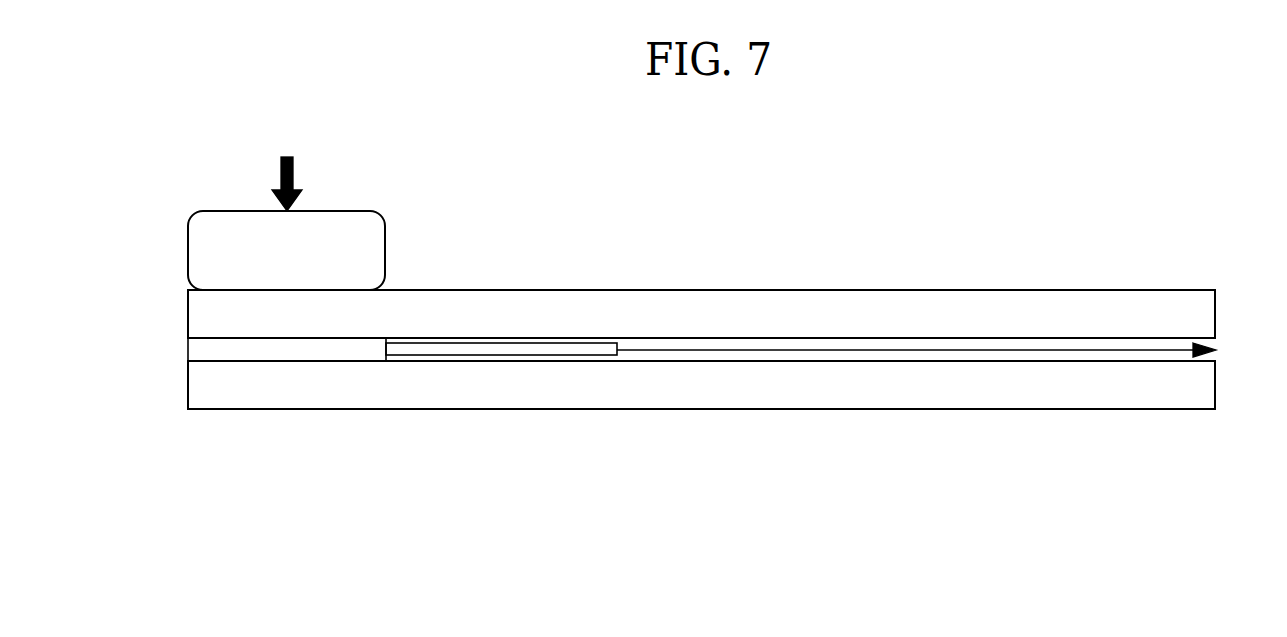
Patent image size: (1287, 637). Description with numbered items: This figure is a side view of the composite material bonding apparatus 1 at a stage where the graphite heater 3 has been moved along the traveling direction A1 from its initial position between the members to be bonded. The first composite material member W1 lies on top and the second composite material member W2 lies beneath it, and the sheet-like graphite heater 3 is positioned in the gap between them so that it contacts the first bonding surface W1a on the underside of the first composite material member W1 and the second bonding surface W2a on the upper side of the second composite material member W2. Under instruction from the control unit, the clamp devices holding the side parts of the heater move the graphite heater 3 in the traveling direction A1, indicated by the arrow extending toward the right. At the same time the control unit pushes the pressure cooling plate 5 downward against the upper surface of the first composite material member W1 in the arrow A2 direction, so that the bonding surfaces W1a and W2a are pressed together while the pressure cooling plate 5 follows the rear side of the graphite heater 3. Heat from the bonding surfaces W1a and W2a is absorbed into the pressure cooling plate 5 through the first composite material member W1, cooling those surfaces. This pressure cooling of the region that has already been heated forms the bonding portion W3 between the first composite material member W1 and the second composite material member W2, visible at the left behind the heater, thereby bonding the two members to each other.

The composite material bonding apparatus 1 is at (422, 192).
The graphite heater 3 is at (534, 343).
The pressure cooling plate 5 is at (385, 250).
The first composite material member W1 is at (943, 290).
The first bonding surface W1a is at (692, 343).
The second composite material member W2 is at (980, 409).
The second bonding surface W2a is at (755, 357).
The bonding portion W3 is at (292, 352).
The traveling direction A1 is at (1098, 350).
The arrow direction A2 is at (293, 168).